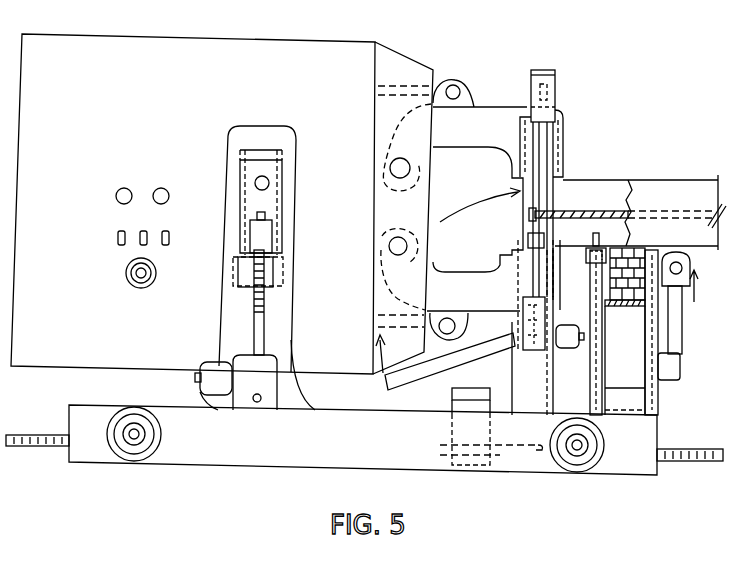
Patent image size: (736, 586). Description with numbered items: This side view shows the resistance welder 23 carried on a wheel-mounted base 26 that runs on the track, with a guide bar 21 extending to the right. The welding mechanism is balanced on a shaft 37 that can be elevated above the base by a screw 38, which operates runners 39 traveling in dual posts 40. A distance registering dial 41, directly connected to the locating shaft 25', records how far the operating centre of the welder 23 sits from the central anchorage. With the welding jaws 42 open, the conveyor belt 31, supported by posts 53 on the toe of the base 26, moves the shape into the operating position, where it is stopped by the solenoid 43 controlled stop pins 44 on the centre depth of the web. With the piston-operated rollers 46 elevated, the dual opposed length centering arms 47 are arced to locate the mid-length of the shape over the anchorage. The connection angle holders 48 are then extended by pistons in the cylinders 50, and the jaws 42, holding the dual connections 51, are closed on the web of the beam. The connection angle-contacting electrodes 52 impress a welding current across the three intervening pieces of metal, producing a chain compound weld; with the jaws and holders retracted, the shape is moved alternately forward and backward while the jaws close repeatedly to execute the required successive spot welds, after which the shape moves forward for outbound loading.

The guide bar 21 is at (672, 184).
The welder 23 is at (483, 46).
The locating shaft 25' is at (364, 432).
The base 26 is at (345, 449).
The conveyor belt 31 is at (638, 232).
The shaft 37 is at (270, 185).
The screw 38 is at (266, 312).
The runners 39 is at (278, 213).
The dual posts 40 is at (288, 272).
The distance registering dial 41 is at (472, 392).
The welding jaws 42 is at (488, 100).
The solenoid 43 is at (588, 262).
The stop pins 44 is at (585, 216).
The rollers 46 is at (692, 268).
The length centering arms 47 is at (393, 388).
The connection angle holders 48 is at (525, 239).
The cylinders 50 is at (556, 88).
The dual connections 51 is at (527, 192).
The connection angle-contacting-electrodes 52 is at (568, 183).
The posts 53 is at (593, 362).